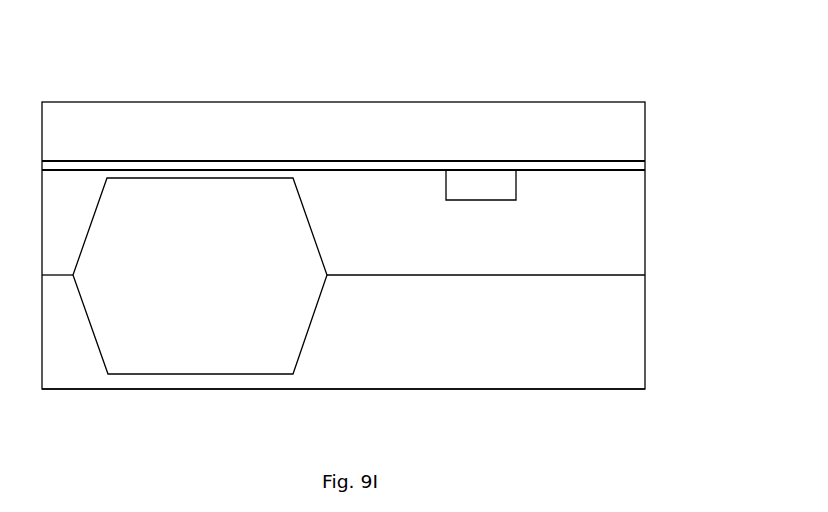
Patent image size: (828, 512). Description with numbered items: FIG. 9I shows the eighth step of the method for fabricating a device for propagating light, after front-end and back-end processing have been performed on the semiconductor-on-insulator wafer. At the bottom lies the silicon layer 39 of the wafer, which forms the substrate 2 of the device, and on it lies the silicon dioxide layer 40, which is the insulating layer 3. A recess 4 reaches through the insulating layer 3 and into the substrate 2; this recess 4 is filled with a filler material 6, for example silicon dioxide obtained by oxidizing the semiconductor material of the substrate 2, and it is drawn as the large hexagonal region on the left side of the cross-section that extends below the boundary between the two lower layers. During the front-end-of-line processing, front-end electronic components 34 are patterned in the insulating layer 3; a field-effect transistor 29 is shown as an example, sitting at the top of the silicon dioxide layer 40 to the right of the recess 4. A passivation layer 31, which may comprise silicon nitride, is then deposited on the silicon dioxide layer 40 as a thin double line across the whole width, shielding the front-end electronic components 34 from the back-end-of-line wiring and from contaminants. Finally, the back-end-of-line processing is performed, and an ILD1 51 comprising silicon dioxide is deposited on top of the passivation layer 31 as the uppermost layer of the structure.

The substrate 2 is at (625, 307).
The insulating layer 3 is at (620, 250).
The recess 4 is at (200, 204).
The filler material 6 is at (158, 207).
The field-effect transistor 29 is at (498, 102).
The passivation layer 31 is at (645, 166).
The front-end electronic components 34 is at (505, 175).
The silicon layer 39 is at (393, 340).
The silicon dioxide layer 40 is at (393, 249).
The ILD1 51 is at (607, 110).